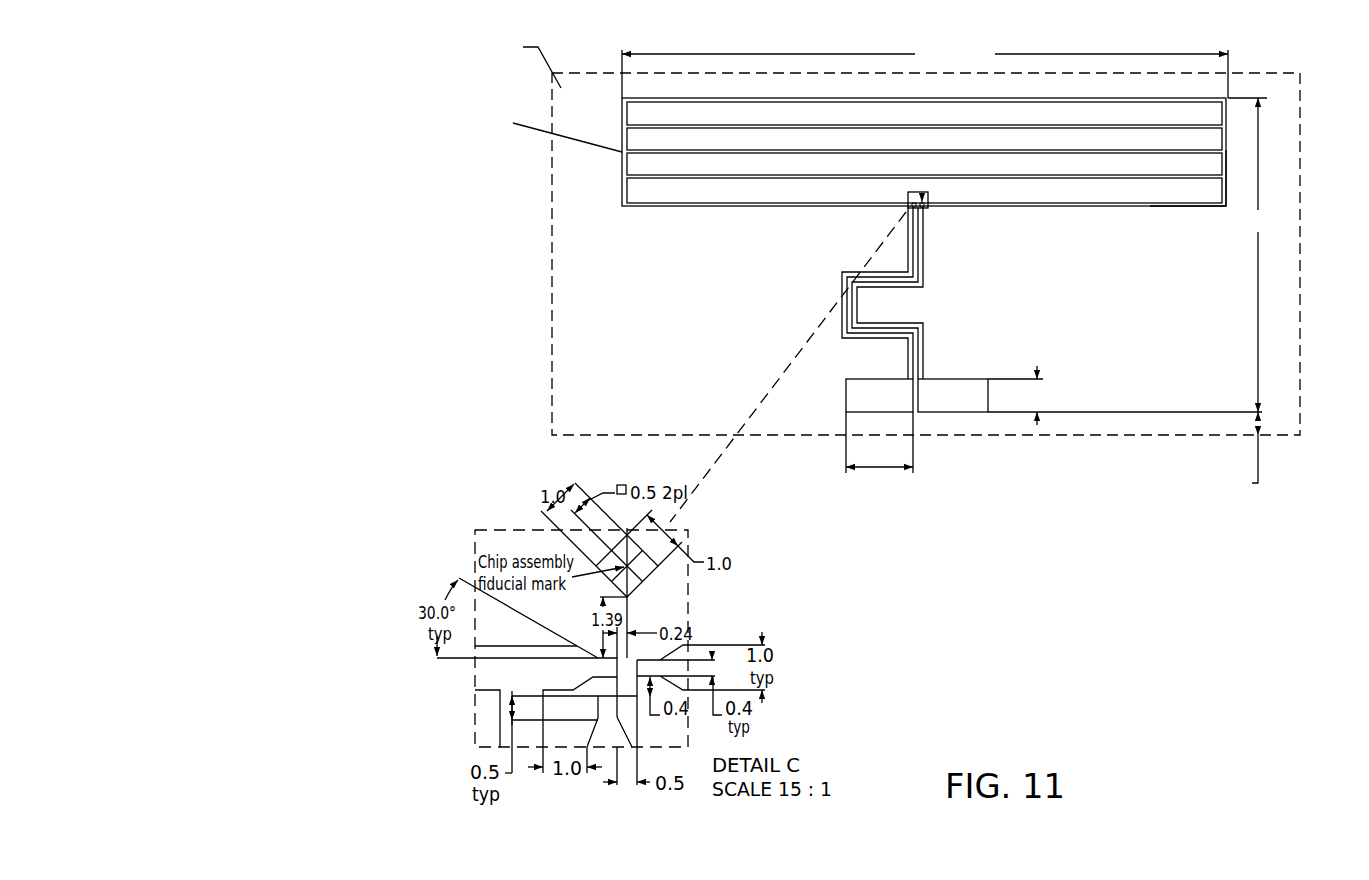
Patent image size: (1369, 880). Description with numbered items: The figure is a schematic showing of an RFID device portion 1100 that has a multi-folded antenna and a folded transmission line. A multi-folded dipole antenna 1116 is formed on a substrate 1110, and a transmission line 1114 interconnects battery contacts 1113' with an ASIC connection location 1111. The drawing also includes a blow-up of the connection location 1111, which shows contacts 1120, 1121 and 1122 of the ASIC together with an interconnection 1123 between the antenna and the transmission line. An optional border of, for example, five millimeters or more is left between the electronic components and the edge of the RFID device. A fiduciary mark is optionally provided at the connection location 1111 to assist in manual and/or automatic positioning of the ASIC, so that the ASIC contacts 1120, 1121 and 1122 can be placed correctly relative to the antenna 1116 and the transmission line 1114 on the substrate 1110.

The RFID device portion 1100 is at (348, 160).
The substrate 1110 is at (1202, 355).
The ASIC connection location 1111 is at (930, 211).
The battery contacts 1113' is at (966, 373).
The transmission line 1114 is at (926, 250).
The multi-folded dipole antenna 1116 is at (1162, 207).
The contact 1120 is at (662, 662).
The contact 1121 is at (575, 681).
The contact 1122 is at (619, 743).
The interconnection 1123 is at (541, 743).